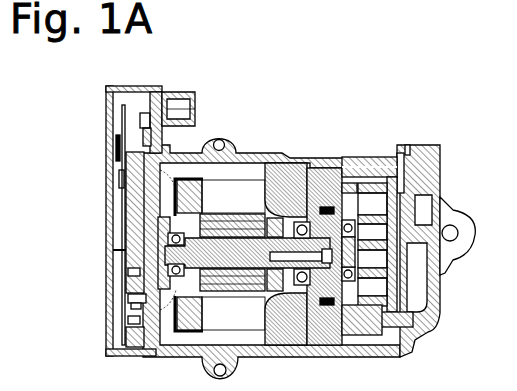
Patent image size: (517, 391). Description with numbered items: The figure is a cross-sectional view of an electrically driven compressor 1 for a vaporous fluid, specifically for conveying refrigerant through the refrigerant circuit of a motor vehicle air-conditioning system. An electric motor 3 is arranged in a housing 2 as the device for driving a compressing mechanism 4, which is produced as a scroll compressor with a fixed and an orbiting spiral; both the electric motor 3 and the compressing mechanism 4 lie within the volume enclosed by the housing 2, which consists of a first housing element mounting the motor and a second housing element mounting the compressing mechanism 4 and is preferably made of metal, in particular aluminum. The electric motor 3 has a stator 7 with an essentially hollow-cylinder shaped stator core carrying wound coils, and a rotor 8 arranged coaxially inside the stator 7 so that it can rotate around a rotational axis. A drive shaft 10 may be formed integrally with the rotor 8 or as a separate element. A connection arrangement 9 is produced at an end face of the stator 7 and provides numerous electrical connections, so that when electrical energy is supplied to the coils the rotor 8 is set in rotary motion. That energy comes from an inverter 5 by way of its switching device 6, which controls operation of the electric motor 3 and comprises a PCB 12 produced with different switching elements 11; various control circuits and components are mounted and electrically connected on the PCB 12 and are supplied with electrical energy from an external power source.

The electrically driven compressor 1 is at (253, 229).
The housing 2 is at (273, 140).
The electric motor 3 is at (232, 168).
The compressing mechanism 4 is at (366, 163).
The inverter 5 is at (99, 113).
The switching device 6 is at (88, 228).
The stator 7 is at (312, 346).
The rotor 8 is at (233, 279).
The connection arrangement 9 is at (120, 180).
The drive shaft 10 is at (204, 282).
The switching elements 11 is at (116, 272).
The PCB 12 is at (118, 298).